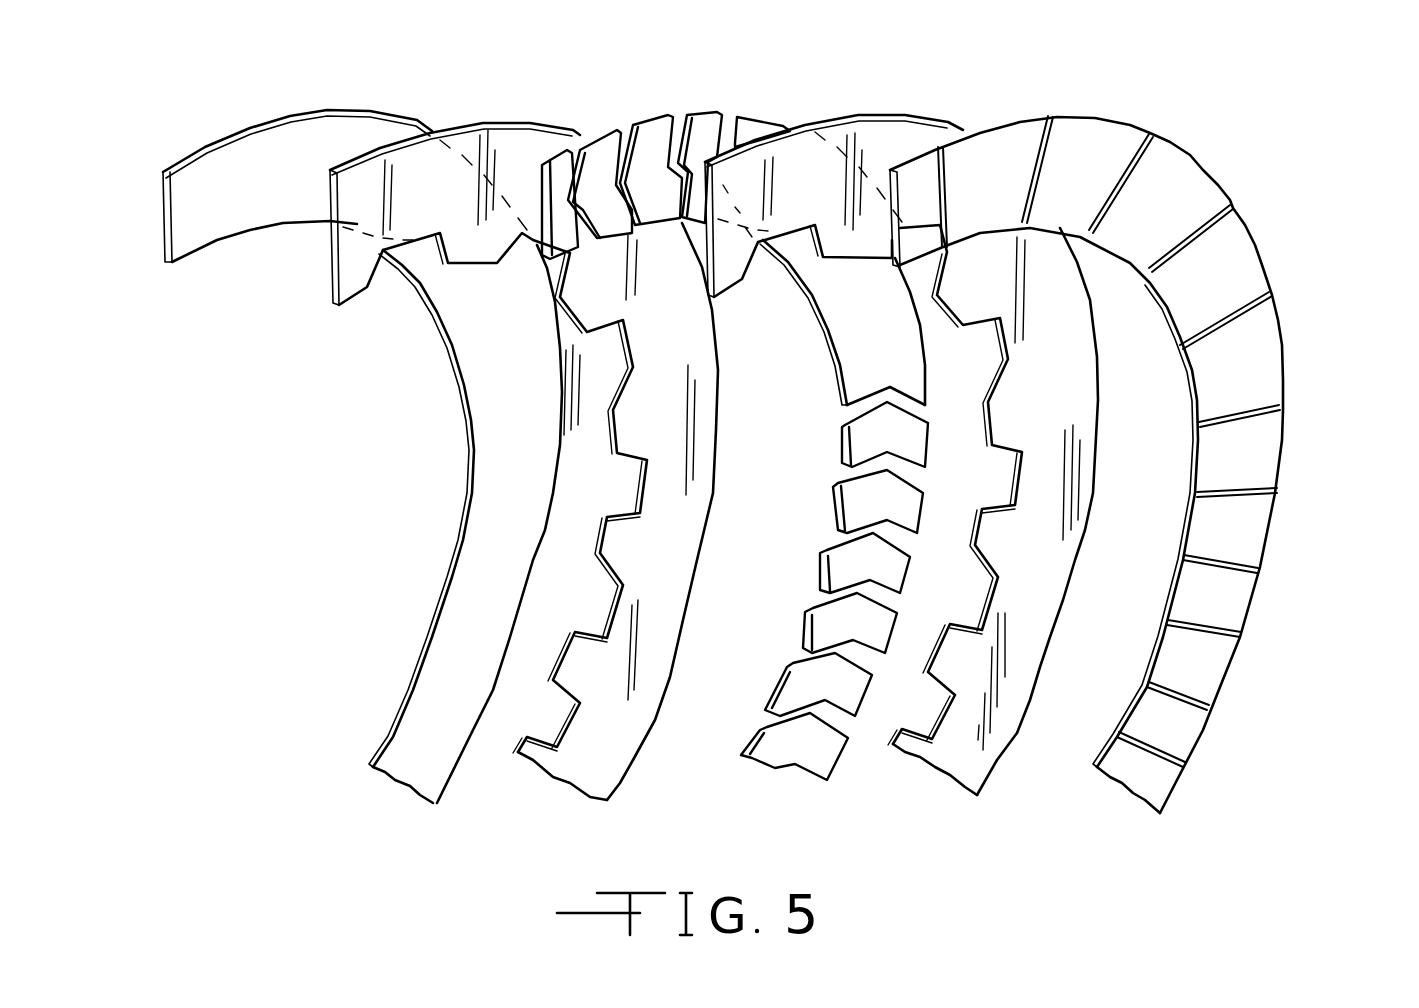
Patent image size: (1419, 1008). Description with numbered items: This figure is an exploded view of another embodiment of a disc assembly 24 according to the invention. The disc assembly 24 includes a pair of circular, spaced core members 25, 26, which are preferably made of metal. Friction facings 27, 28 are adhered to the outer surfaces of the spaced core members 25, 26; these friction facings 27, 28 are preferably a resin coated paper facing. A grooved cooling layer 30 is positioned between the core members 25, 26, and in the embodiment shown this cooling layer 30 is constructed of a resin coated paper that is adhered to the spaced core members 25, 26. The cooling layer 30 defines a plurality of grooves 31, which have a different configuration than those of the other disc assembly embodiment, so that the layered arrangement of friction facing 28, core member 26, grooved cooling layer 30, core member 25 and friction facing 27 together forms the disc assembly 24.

The disc assembly 24 is at (1282, 357).
The core member 25 is at (1008, 747).
The core member 26 is at (645, 735).
The friction facing 27 is at (1257, 602).
The friction facing 28 is at (397, 717).
The grooved cooling layer 30 is at (797, 281).
The grooves 31 is at (567, 147).